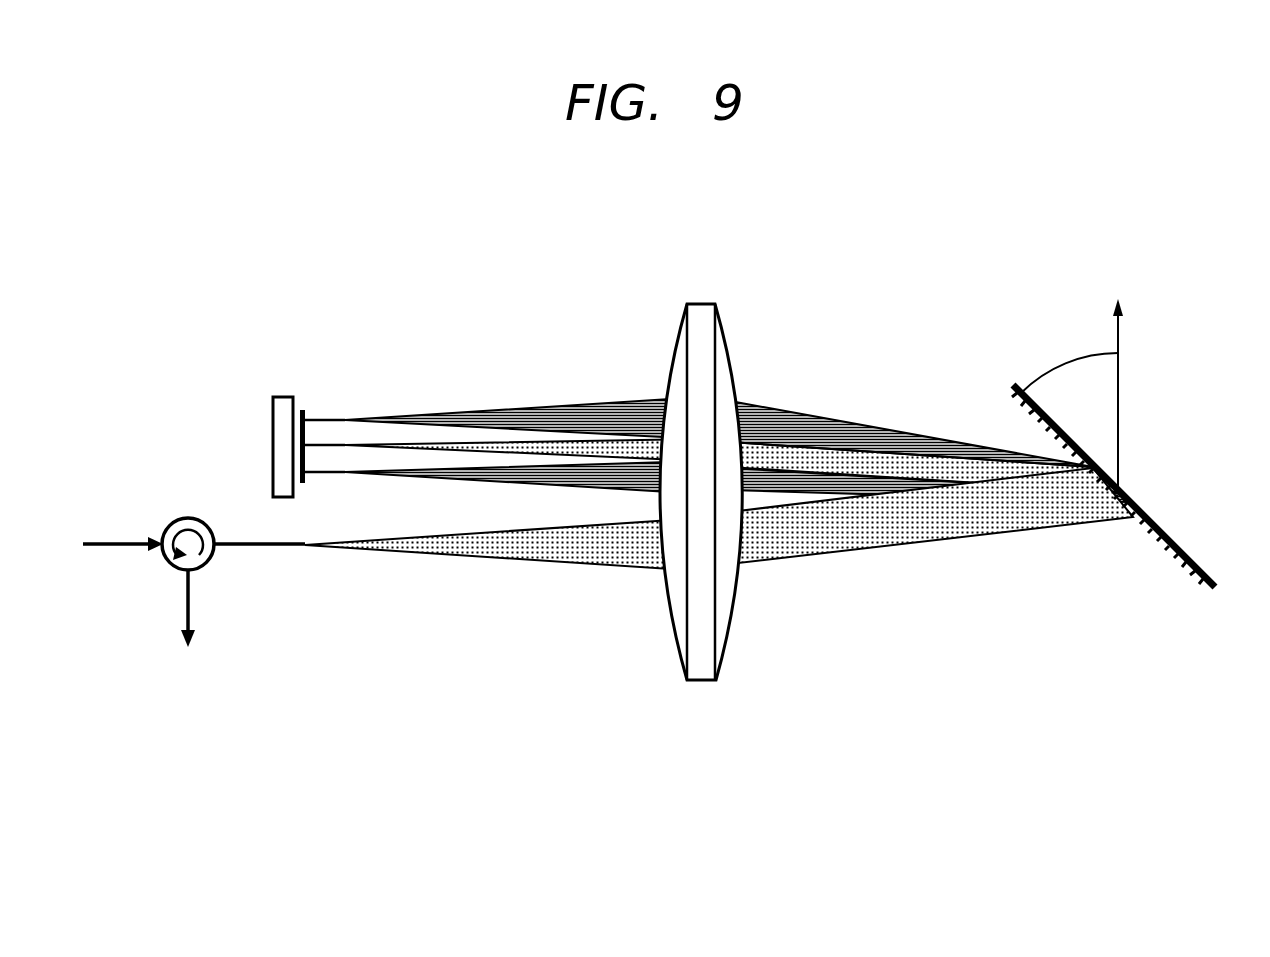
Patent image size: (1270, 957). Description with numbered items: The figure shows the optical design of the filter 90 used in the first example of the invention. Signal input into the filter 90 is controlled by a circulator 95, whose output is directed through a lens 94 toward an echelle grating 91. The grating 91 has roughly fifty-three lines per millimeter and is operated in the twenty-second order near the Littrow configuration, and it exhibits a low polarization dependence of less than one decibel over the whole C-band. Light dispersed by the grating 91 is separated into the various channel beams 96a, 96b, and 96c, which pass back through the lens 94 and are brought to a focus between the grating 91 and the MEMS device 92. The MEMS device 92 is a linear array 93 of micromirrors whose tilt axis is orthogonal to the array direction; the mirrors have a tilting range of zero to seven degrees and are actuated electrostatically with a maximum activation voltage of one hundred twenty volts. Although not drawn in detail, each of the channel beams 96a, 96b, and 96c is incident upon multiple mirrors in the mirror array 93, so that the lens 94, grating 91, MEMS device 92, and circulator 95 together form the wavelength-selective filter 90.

The filter 90 is at (815, 290).
The echelle grating 91 is at (1178, 538).
The MEMS device 92 is at (247, 404).
The linear array of micromirrors 93 is at (305, 414).
The lens 94 is at (730, 625).
The circulator 95 is at (172, 568).
The channel beam 96a is at (478, 415).
The channel beam 96b is at (553, 450).
The channel beam 96c is at (620, 473).